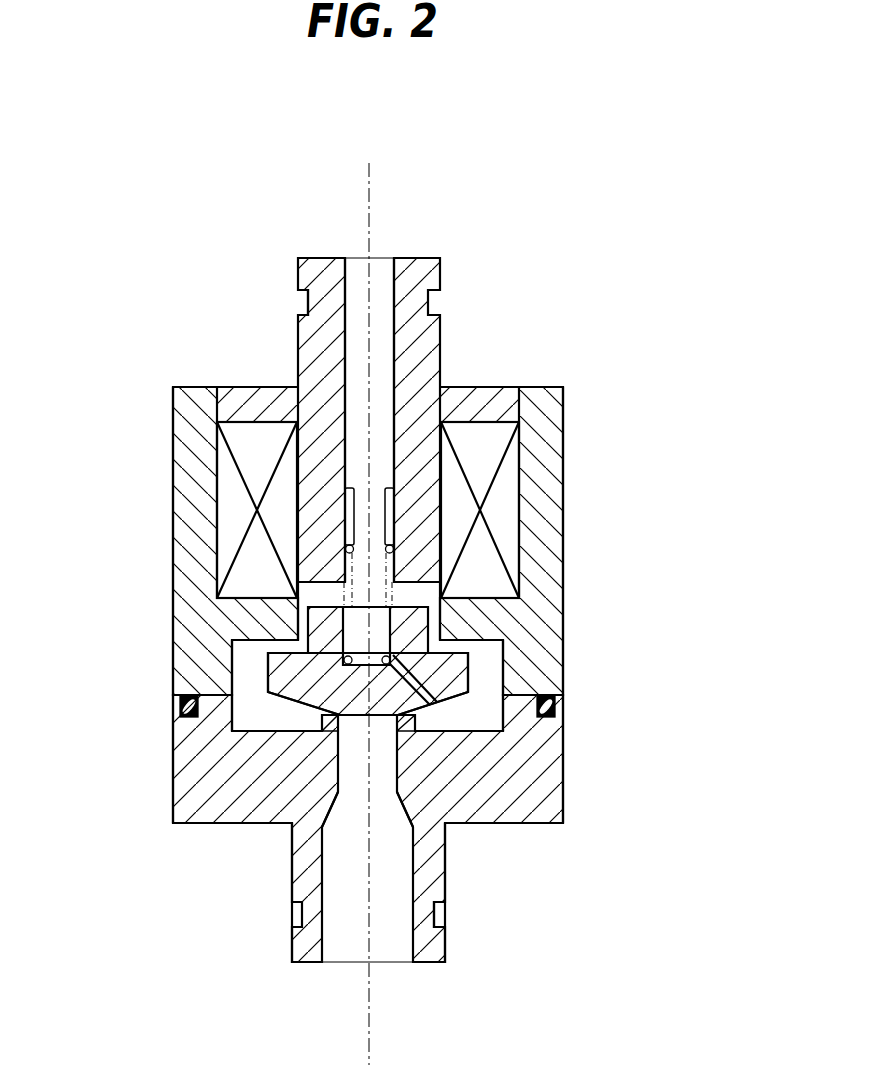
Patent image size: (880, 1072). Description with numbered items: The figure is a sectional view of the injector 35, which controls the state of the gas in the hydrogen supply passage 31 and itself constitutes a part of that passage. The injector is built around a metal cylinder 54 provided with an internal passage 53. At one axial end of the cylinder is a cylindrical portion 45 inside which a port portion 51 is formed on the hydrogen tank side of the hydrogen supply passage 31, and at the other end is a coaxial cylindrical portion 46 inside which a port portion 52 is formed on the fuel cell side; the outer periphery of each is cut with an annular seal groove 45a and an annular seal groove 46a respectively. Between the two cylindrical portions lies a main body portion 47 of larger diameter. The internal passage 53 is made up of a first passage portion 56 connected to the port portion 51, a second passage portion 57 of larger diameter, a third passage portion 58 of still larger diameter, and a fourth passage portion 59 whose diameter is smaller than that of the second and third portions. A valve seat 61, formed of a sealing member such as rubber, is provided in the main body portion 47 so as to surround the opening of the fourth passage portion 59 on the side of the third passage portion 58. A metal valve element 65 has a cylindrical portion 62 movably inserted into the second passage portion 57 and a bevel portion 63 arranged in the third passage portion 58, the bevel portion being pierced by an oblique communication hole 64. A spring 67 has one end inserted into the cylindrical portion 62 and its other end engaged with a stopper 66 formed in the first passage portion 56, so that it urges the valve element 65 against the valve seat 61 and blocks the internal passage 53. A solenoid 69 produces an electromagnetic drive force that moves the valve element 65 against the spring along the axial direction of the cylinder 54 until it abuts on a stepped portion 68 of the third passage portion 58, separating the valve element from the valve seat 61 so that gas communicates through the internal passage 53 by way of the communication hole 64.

The hydrogen supply passage 31 is at (371, 218).
The injector 35 is at (632, 368).
The cylindrical portion 45 is at (298, 345).
The annular seal groove 45a is at (306, 300).
The cylindrical portion 46 is at (292, 870).
The annular seal groove 46a is at (443, 920).
The main body portion 47 is at (173, 445).
The port portion 51 is at (350, 257).
The port portion 52 is at (322, 963).
The internal passage 53 is at (353, 743).
The metal cylinder 54 is at (570, 589).
The first passage portion 56 is at (395, 378).
The second passage portion 57 is at (302, 608).
The third passage portion 58 is at (245, 665).
The fourth passage portion 59 is at (390, 778).
The valve seat 61 is at (415, 731).
The cylindrical portion 62 is at (421, 632).
The bevel portion 63 is at (458, 663).
The communication hole 64 is at (437, 708).
The valve element 65 is at (274, 698).
The stopper 66 is at (392, 512).
The spring 67 is at (343, 597).
The stepped portion 68 is at (245, 648).
The solenoid 69 is at (508, 473).